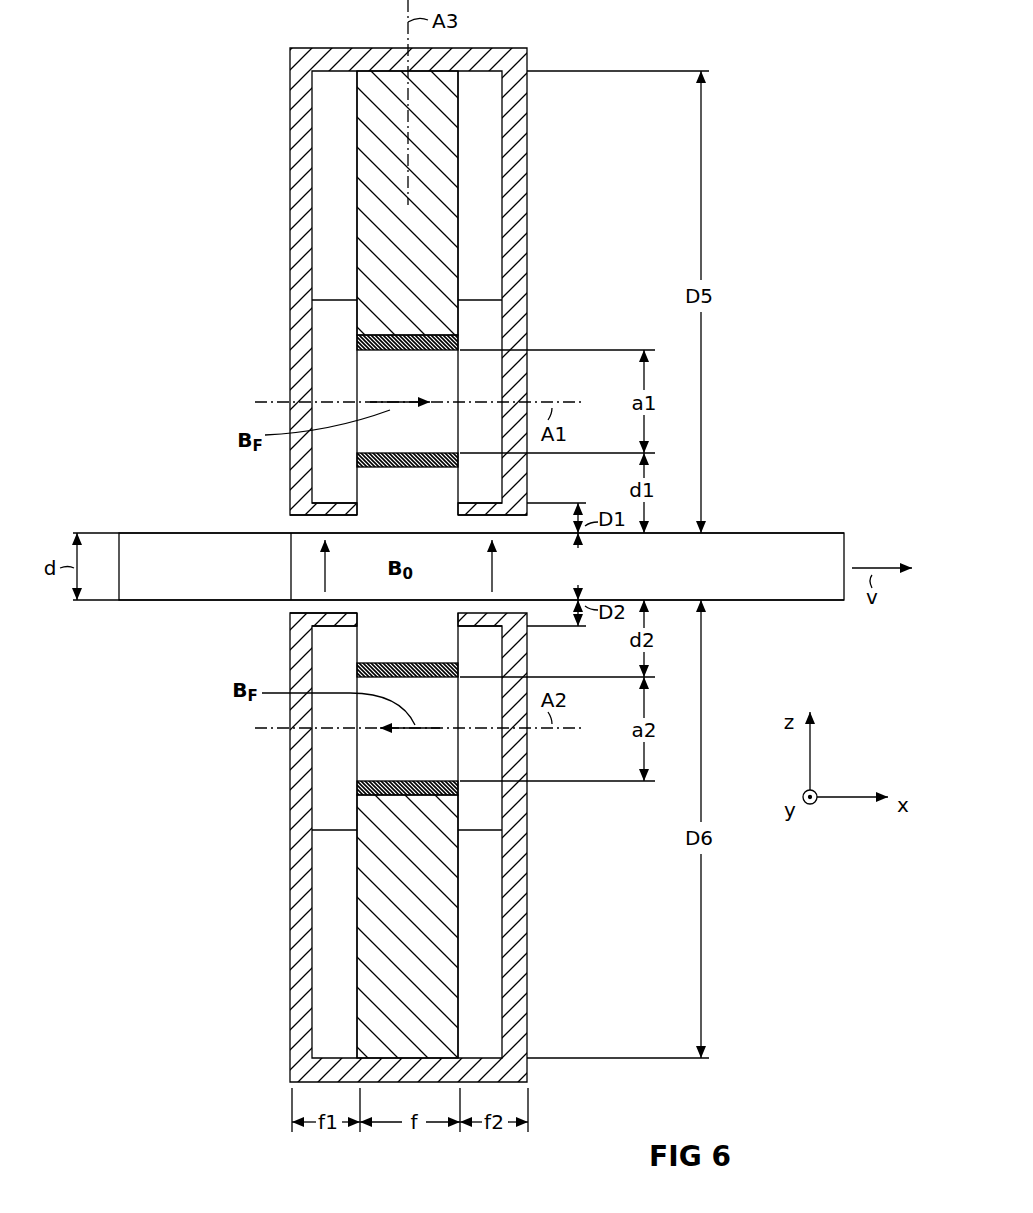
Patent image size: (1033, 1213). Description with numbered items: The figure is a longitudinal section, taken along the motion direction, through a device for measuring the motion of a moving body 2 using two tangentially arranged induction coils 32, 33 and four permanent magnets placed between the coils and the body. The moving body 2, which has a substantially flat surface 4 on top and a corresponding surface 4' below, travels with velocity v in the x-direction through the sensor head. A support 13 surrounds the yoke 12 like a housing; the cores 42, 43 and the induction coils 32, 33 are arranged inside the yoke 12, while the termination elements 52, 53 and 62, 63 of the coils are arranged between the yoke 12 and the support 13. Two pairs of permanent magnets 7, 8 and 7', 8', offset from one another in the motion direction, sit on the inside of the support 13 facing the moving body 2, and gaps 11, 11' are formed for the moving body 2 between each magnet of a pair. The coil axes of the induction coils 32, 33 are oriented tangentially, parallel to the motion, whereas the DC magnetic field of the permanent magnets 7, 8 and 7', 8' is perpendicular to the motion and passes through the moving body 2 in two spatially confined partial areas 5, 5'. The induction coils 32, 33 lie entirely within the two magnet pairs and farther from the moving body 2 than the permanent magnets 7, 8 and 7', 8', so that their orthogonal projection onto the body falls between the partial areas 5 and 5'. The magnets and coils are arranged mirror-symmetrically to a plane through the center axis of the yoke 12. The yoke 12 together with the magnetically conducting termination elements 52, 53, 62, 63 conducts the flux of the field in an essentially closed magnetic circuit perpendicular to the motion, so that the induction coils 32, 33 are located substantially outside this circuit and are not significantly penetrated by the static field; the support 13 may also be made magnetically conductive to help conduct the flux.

The moving body 2 is at (812, 603).
The flat surface 4 is at (481, 508).
The lower surface of rod 4' is at (481, 623).
The partial area 5 is at (290, 566).
The partial area 5' is at (530, 566).
The permanent magnet 7 is at (300, 489).
The permanent magnet 7' is at (514, 487).
The permanent magnet 8 is at (301, 640).
The permanent magnet 8' is at (514, 643).
The gap 11 is at (277, 566).
The gap 11' is at (462, 512).
The yoke 12 is at (385, 165).
The support 13 is at (300, 108).
The induction coil 32 is at (380, 335).
The induction coil 33 is at (380, 812).
The core 42 is at (398, 385).
The core 43 is at (400, 745).
The termination element 52 is at (330, 345).
The termination element 53 is at (330, 787).
The termination element 62 is at (485, 330).
The termination element 63 is at (485, 805).